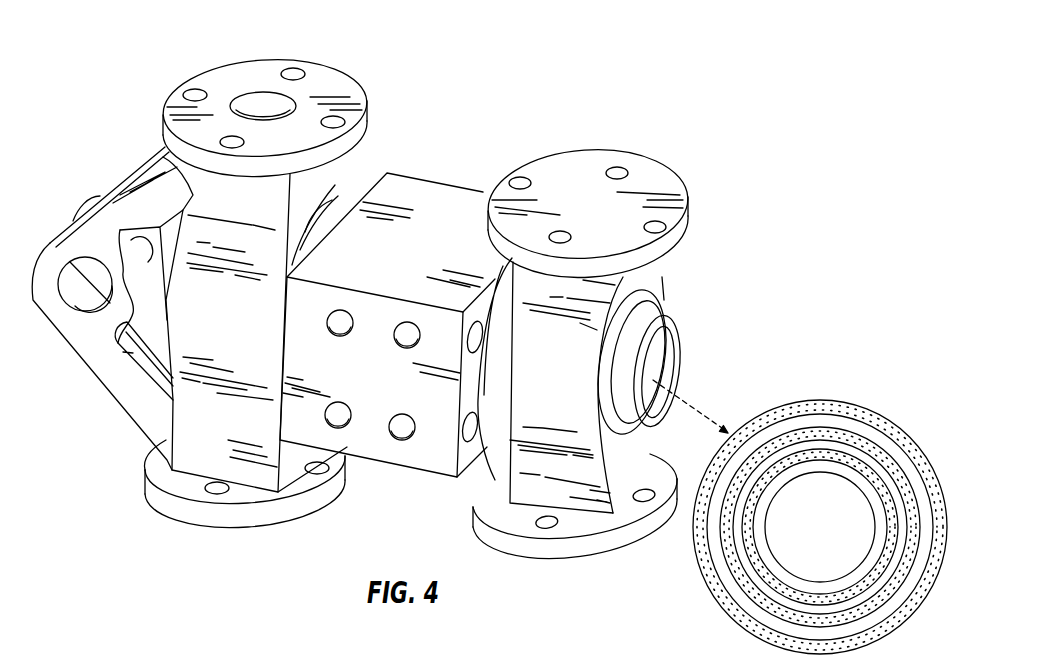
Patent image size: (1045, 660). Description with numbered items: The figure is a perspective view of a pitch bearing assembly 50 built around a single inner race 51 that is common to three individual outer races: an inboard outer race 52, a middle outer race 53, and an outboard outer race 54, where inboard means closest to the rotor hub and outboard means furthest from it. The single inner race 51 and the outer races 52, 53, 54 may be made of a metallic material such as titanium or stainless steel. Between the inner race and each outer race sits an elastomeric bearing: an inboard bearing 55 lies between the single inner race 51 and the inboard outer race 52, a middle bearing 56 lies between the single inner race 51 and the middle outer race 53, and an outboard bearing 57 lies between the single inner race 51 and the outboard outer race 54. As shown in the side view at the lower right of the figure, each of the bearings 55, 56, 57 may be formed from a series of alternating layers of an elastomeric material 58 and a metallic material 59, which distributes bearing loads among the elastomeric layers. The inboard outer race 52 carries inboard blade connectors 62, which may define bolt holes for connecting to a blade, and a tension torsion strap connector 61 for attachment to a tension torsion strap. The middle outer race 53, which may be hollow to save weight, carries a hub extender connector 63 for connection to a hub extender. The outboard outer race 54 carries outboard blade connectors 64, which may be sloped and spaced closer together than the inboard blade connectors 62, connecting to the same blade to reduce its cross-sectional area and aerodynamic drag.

The pitch bearing assembly 50 is at (556, 50).
The single inner race 51 is at (677, 373).
The inboard outer race 52 is at (150, 160).
The middle outer race 53 is at (437, 192).
The outboard outer race 54 is at (650, 282).
The inboard bearing 55 is at (318, 232).
The middle bearing 56 is at (478, 461).
The outboard bearing 57 is at (648, 304).
The elastomeric material layers 58 is at (768, 583).
The metallic material layers 59 is at (785, 607).
The tension torsion strap connector 61 is at (65, 317).
The inboard blade connectors 62 is at (232, 76).
The hub extender connector 63 is at (370, 433).
The outboard blade connectors 64 is at (583, 160).